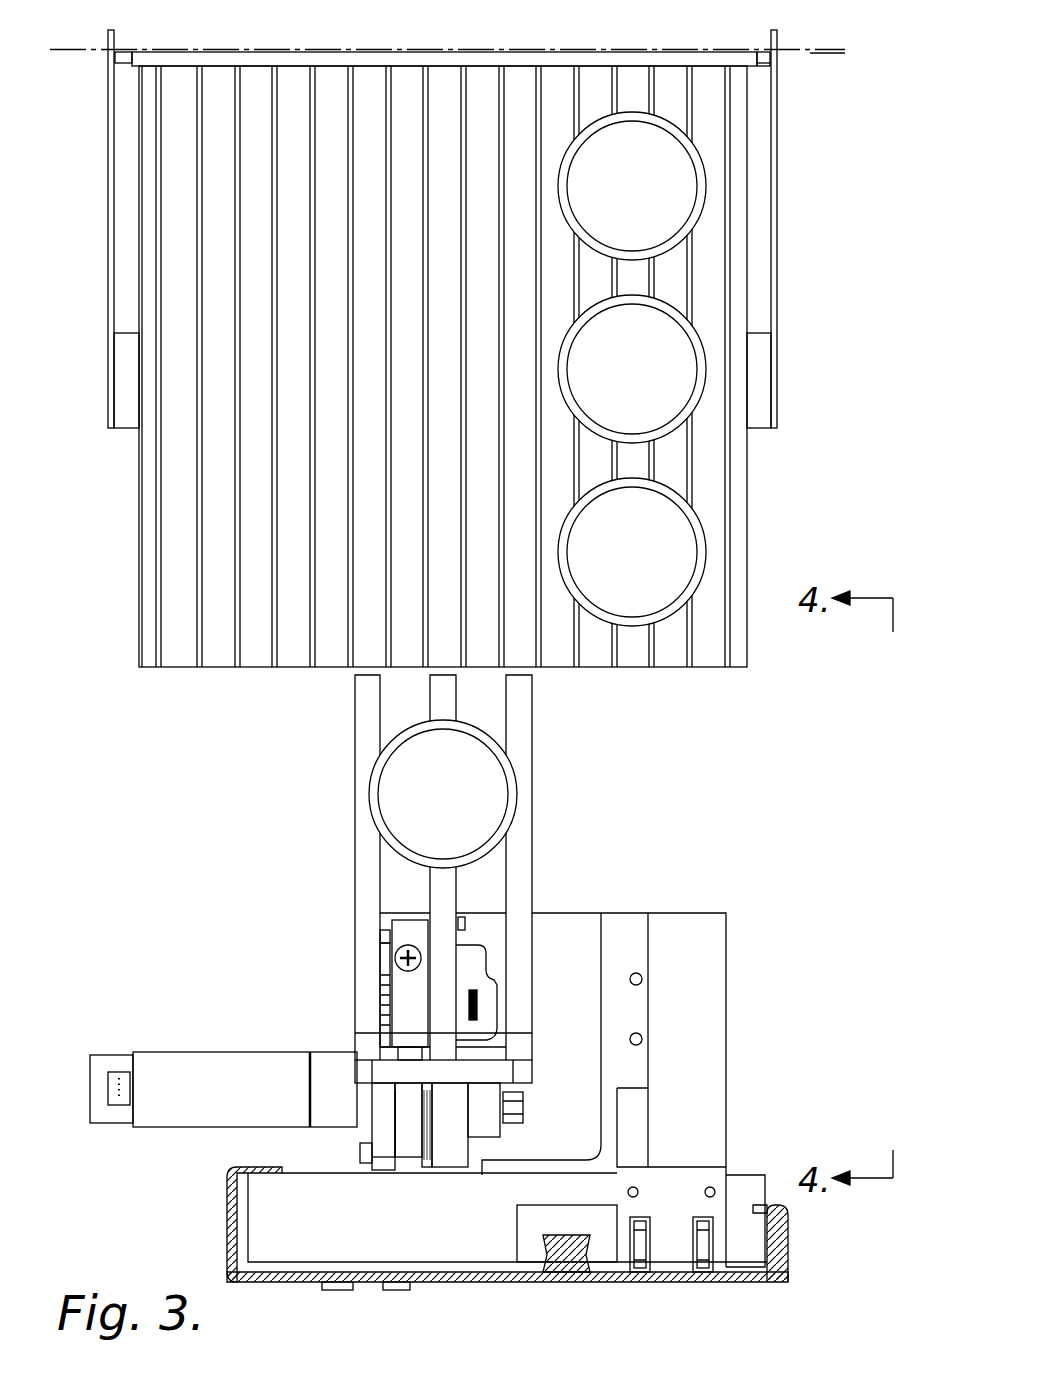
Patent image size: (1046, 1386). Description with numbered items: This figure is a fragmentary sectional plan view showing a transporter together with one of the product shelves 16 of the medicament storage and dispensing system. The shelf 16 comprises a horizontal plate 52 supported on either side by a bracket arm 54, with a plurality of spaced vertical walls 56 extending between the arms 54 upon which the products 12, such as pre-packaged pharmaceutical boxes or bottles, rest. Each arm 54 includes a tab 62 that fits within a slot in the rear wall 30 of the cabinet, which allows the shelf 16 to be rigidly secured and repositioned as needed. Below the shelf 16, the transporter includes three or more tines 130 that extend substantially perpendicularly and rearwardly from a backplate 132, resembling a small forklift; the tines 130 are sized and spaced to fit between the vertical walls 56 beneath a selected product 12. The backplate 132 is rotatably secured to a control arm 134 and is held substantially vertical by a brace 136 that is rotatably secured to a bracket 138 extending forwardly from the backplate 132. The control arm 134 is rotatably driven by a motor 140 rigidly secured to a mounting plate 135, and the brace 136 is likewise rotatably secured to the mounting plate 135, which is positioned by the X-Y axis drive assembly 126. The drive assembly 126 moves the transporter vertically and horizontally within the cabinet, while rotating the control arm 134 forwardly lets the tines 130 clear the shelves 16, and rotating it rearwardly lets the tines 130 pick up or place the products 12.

The product 12 is at (537, 490).
The product shelf 16 is at (762, 480).
The rear wall 30 is at (818, 55).
The horizontal plate 52 is at (148, 516).
The bracket arm 54 is at (113, 368).
The vertical wall 56 is at (351, 94).
The tab 62 is at (112, 32).
The X-Y axis drive assembly 126 is at (222, 1239).
The tine 130 is at (350, 770).
The backplate 132 is at (386, 1070).
The control arm 134 is at (450, 1138).
The mounting plate 135 is at (752, 1088).
The brace 136 is at (385, 1162).
The bracket 138 is at (410, 1111).
The motor 140 is at (172, 1035).